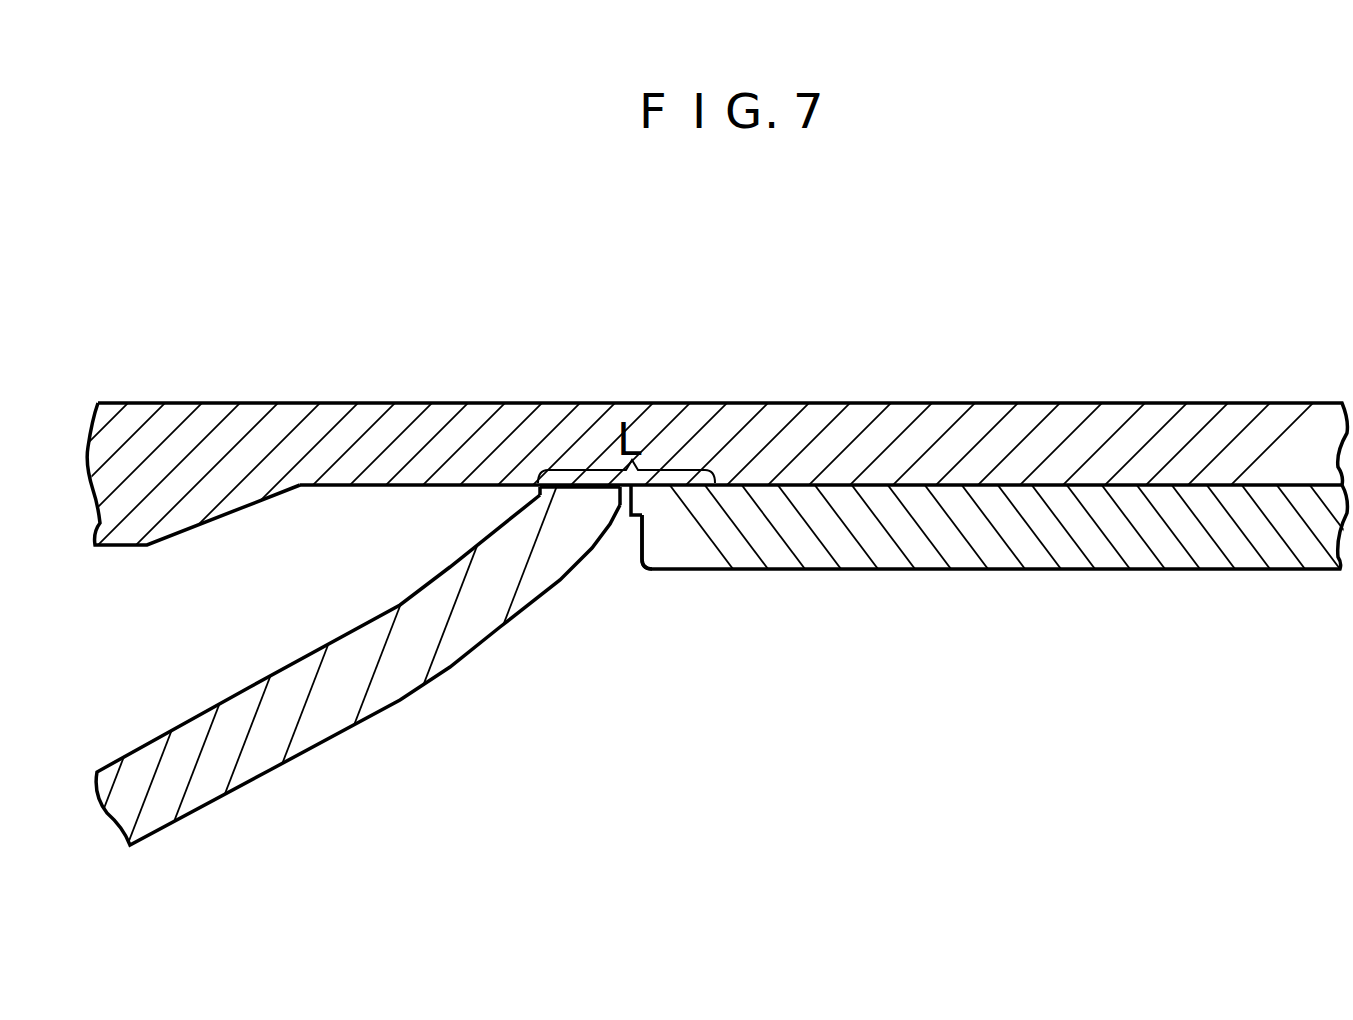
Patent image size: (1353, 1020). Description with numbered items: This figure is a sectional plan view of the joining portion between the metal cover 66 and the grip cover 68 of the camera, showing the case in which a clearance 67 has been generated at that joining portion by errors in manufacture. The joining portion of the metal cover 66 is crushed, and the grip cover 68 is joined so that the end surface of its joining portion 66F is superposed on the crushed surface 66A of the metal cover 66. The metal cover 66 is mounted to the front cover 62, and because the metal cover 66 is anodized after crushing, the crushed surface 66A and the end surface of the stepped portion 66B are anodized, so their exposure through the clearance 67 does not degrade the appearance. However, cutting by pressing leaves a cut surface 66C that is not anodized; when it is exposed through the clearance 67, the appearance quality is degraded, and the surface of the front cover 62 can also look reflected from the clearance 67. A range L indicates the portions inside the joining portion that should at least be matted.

The front cover 62 is at (998, 440).
The metal cover 66 is at (1032, 547).
The crushed surface 66A is at (628, 518).
The stepped portion 66B is at (634, 547).
The cut surface 66C is at (626, 493).
The contact surface of lever 66F is at (578, 487).
The clearance 67 is at (608, 552).
The grip cover 68 is at (327, 727).